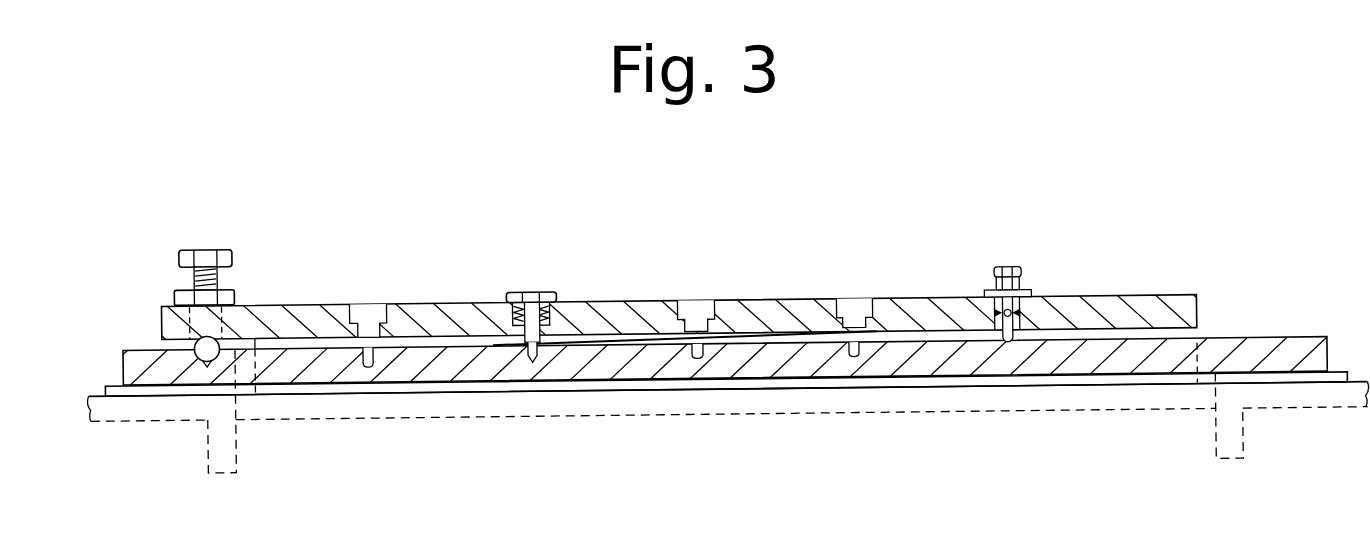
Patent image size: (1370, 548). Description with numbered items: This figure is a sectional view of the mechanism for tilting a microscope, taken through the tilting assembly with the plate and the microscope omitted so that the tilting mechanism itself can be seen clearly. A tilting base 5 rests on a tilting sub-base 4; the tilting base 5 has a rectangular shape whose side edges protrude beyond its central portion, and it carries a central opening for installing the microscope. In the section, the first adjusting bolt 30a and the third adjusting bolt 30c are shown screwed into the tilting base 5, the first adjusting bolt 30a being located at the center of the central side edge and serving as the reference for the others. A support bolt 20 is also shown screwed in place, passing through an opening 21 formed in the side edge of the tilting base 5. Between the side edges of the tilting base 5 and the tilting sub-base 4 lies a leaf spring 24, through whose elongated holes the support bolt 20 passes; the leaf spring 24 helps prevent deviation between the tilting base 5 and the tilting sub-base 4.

The tilting sub-base 4 is at (1262, 363).
The tilting base 5 is at (1147, 315).
The support bolt 20 is at (530, 296).
The opening 21 is at (855, 315).
The leaf spring 24 is at (636, 345).
The first adjusting bolt 30a is at (203, 254).
The third adjusting bolt 30c is at (1007, 270).